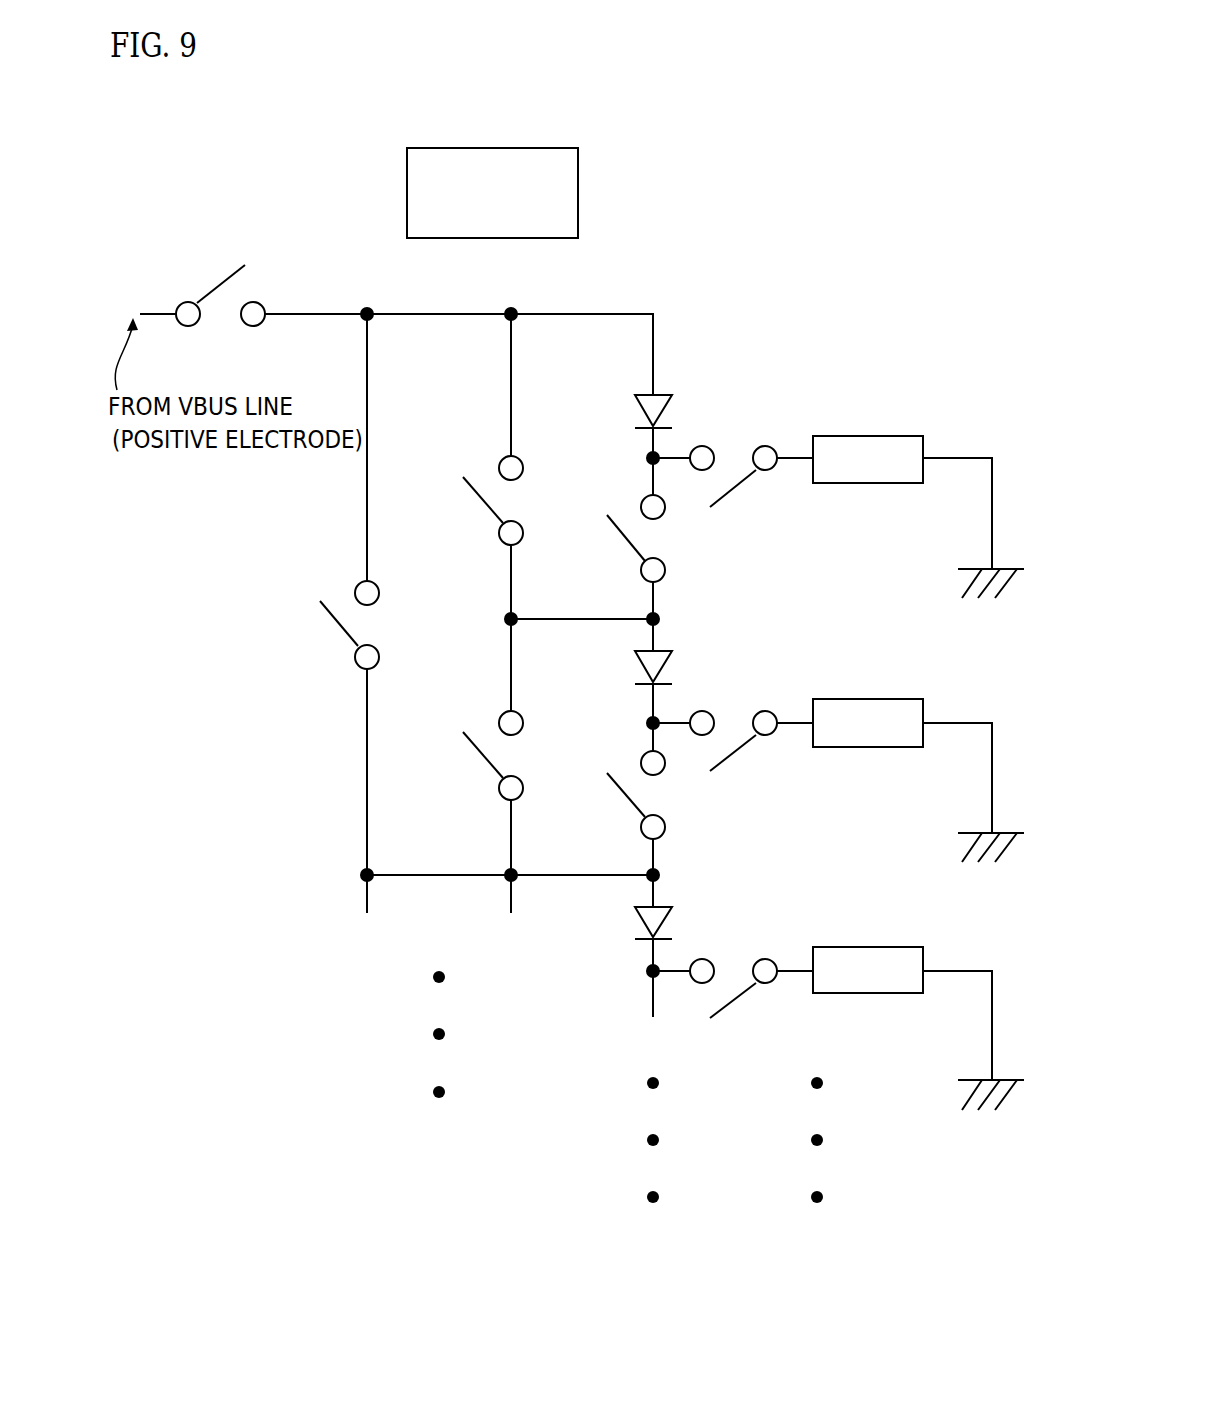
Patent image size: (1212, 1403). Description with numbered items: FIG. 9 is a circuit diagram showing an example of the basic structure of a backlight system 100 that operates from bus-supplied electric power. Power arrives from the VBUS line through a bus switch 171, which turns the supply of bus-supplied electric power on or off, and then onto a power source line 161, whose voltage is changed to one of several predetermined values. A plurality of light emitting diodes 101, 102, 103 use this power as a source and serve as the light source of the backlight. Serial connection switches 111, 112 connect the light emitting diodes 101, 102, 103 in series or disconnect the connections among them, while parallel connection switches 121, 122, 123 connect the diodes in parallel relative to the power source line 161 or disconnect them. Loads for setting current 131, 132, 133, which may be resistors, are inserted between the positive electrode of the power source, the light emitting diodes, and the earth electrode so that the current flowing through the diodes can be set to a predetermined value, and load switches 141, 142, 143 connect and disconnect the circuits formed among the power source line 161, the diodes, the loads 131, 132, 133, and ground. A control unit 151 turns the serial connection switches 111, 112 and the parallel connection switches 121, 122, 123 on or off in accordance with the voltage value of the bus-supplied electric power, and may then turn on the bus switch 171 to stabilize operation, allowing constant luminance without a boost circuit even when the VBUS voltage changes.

The backlight system 100 is at (834, 200).
The light emitting diode 101 is at (670, 410).
The light emitting diode 102 is at (670, 668).
The light emitting diode 103 is at (670, 922).
The serial connection switch 111 is at (625, 548).
The serial connection switch 112 is at (625, 805).
The parallel connection switch 121 is at (483, 506).
The parallel connection switch 122 is at (485, 760).
The parallel connection switch 123 is at (340, 628).
The load for setting current 131 is at (870, 436).
The load for setting current 132 is at (870, 699).
The load for setting current 133 is at (870, 947).
The load switch 141 is at (733, 488).
The load switch 142 is at (733, 752).
The load switch 143 is at (733, 1000).
The control unit 151 is at (507, 148).
The power source line 161 is at (320, 312).
The bus switch 171 is at (221, 283).